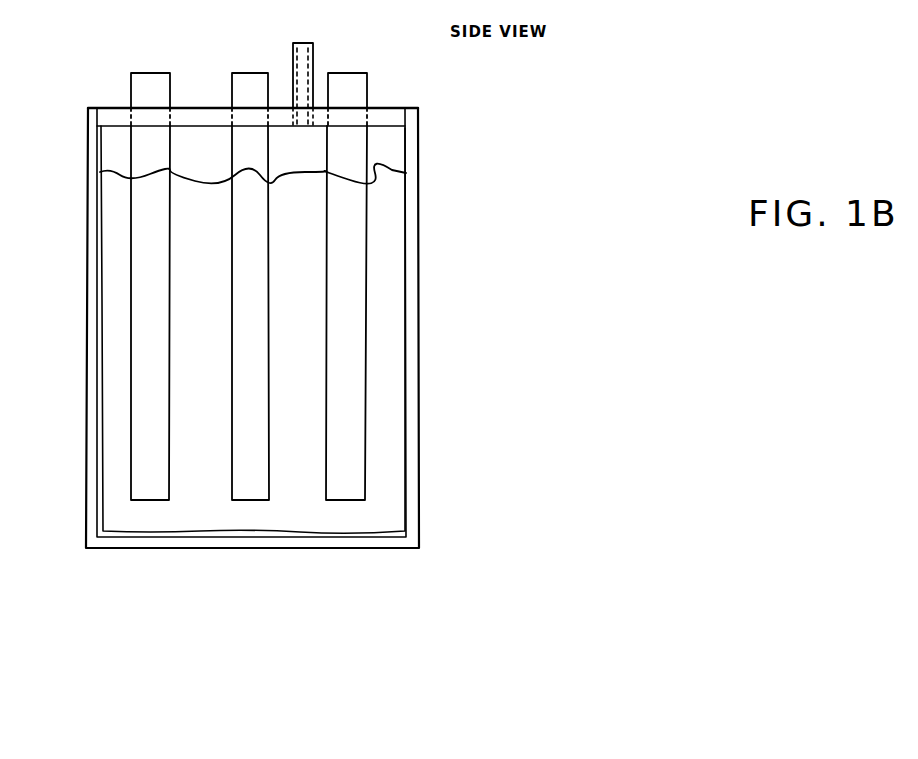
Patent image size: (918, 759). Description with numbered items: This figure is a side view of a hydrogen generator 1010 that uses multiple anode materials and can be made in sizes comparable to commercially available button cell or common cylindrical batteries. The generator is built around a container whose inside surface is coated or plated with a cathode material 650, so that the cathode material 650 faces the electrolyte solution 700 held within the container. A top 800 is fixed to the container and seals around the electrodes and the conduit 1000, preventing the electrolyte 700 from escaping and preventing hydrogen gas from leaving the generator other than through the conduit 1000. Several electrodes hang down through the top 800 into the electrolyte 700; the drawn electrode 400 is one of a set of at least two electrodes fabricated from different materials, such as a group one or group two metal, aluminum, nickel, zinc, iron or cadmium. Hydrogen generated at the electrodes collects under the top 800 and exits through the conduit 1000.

The electrode 400 is at (353, 93).
The top 800 is at (393, 115).
The electrolyte solution 700 is at (385, 307).
The hydrogen generator 1010 is at (545, 452).
The cathode material 650 is at (162, 533).
The conduit 1000 is at (305, 34).